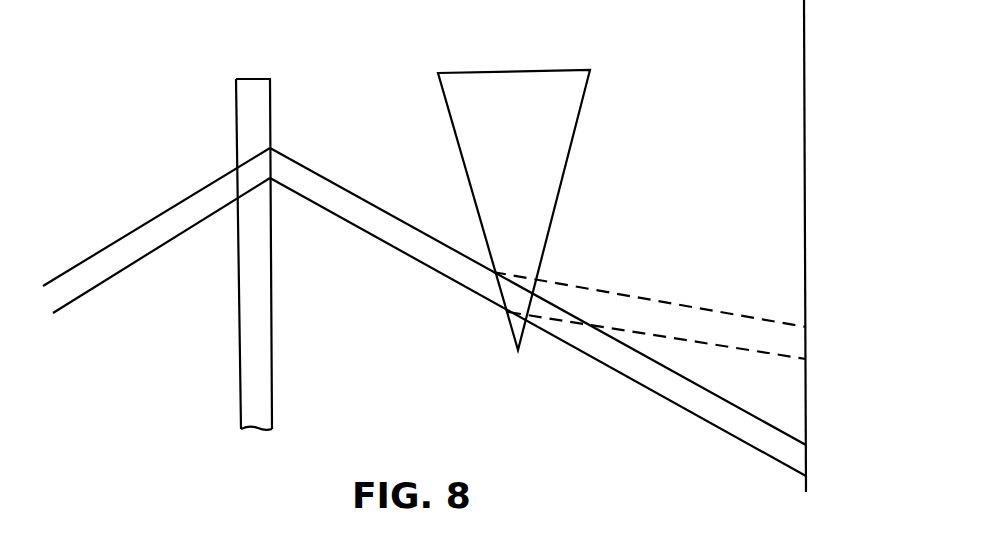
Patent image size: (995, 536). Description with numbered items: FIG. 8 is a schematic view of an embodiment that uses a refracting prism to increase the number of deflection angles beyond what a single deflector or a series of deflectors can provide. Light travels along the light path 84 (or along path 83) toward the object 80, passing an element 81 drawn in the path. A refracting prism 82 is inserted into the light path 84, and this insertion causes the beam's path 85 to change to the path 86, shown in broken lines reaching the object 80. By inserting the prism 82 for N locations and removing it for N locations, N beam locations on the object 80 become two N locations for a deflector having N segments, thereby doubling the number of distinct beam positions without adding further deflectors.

The object 80 is at (804, 168).
The rod / vertical element 81 is at (253, 78).
The refracting prism 82 is at (493, 72).
The path 83 is at (140, 227).
The light path 84 is at (345, 222).
The path 85 is at (632, 382).
The path 86 is at (642, 303).